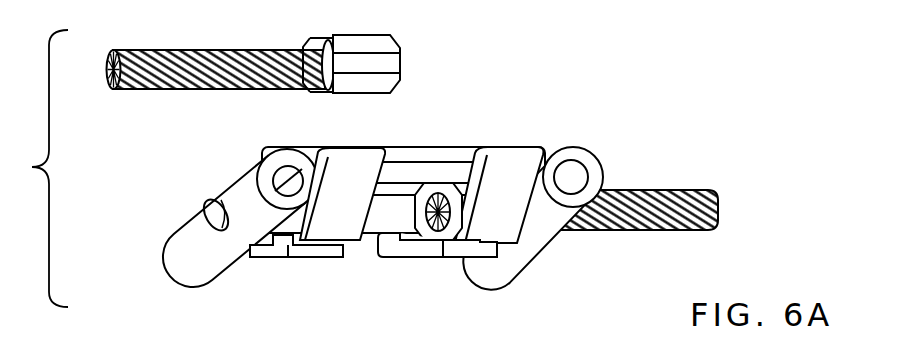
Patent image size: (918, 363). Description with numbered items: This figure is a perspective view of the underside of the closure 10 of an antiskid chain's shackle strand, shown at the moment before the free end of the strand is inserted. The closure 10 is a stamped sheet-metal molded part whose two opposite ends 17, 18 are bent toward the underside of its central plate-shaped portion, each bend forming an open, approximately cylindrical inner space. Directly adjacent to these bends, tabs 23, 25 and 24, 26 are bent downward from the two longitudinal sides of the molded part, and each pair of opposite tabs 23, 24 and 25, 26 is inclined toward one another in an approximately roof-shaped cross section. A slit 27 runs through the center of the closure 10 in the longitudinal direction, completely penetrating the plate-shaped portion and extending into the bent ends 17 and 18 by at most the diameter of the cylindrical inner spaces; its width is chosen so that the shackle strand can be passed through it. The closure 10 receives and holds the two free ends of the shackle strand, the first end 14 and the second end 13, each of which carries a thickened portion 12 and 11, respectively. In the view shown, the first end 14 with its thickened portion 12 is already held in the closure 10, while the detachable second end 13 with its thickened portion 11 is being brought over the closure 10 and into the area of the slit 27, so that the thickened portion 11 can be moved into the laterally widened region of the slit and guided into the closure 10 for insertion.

The closure 10 is at (672, 77).
The thickened portion 11 is at (373, 63).
The thickened portion 12 is at (458, 172).
The second end 13 is at (207, 72).
The first end 14 is at (672, 190).
The bent end 17 is at (160, 256).
The bent end 18 is at (558, 260).
The tab 23 is at (272, 252).
The tab 24 is at (362, 211).
The tab 25 is at (452, 252).
The tab 26 is at (518, 210).
The slit 27 is at (398, 187).